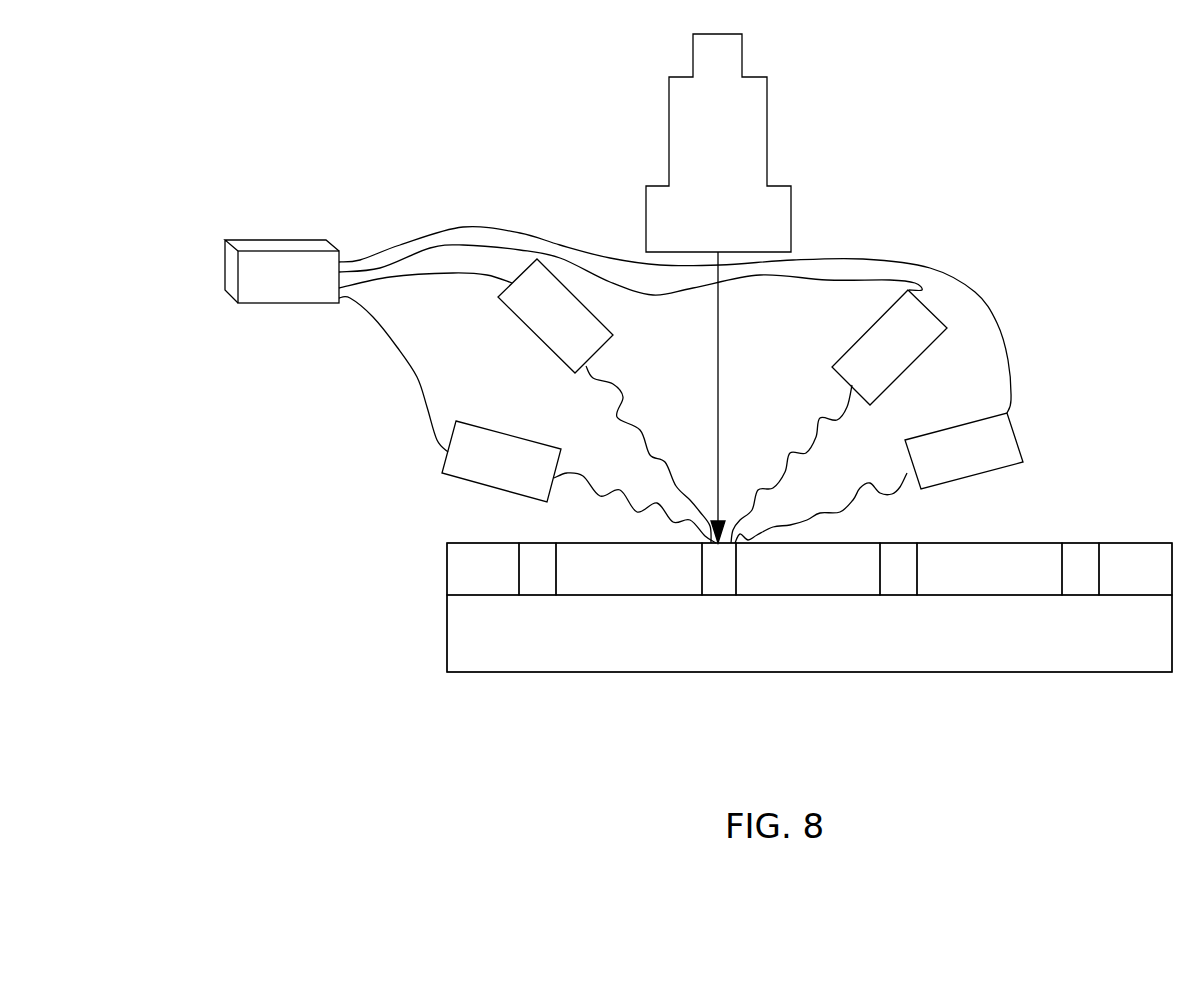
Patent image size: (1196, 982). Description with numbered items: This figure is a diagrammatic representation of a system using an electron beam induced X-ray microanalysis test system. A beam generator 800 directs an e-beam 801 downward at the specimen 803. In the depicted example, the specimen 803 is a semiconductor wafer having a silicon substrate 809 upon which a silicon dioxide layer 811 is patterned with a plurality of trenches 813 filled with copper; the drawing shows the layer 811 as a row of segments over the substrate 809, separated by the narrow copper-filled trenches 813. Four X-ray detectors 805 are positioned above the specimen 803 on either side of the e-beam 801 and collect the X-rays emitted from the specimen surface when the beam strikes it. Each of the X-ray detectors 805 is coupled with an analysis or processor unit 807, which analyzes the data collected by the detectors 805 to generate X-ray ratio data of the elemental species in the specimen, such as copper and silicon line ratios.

The beam generator 800 is at (767, 127).
The e-beam 801 is at (718, 413).
The specimen 803 is at (395, 656).
The X-ray detectors 805 is at (562, 362).
The analysis or processor unit 807 is at (248, 238).
The silicon substrate 809 is at (688, 644).
The silicon dioxide layer 811 is at (504, 582).
The trenches 813 is at (1082, 580).